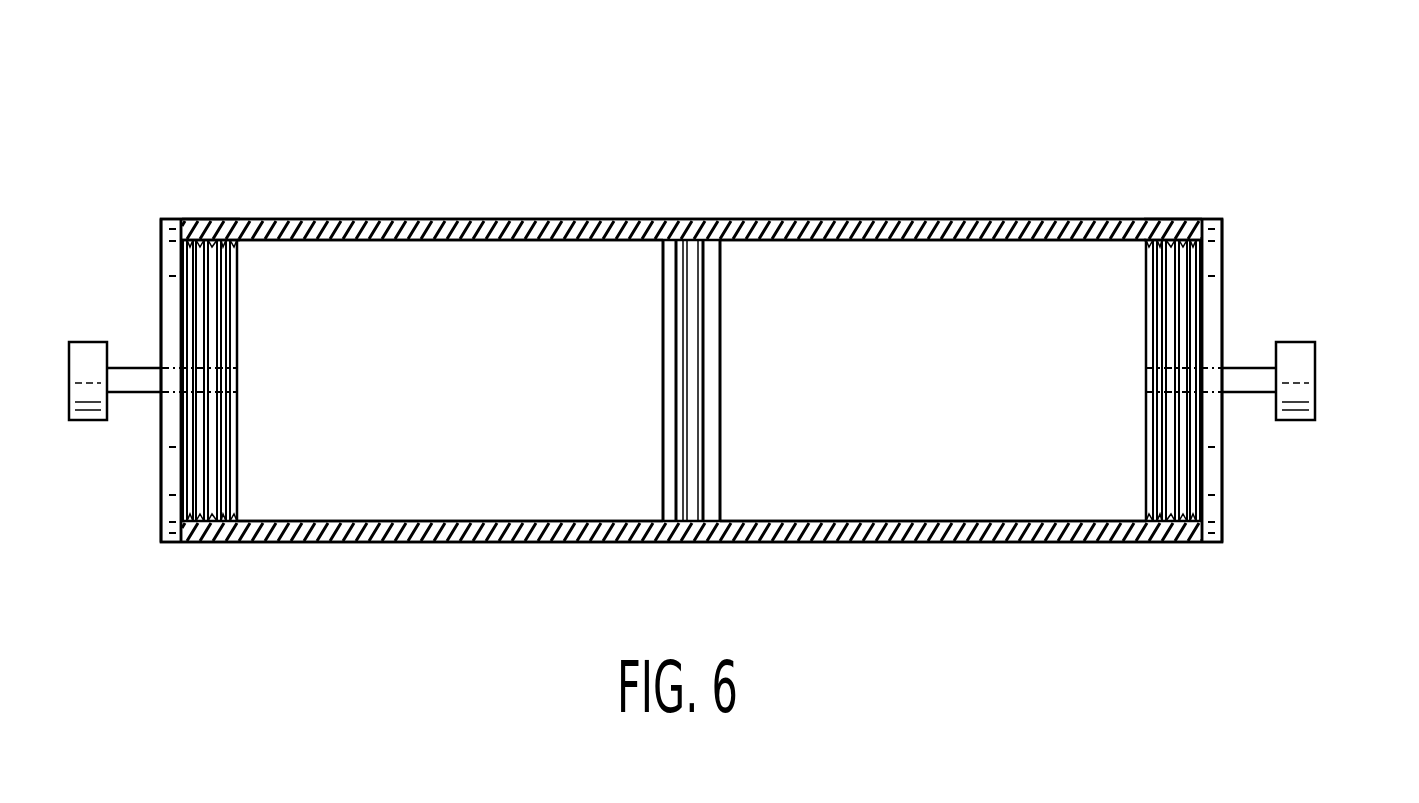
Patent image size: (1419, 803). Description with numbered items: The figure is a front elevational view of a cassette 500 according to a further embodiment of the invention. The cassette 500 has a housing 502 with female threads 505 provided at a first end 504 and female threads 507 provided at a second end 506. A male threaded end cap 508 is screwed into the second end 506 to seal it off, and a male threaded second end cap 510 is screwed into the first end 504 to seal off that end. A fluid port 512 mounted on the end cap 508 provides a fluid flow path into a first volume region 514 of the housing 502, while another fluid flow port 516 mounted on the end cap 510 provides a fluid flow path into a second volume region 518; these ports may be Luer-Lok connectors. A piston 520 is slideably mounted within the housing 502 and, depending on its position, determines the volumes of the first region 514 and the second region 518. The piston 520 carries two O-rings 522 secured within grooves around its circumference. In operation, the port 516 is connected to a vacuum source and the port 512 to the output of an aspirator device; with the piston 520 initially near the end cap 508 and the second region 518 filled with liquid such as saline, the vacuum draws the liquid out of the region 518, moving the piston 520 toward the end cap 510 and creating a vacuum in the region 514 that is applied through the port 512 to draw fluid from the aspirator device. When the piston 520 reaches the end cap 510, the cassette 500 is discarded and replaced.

The cassette 500 is at (1040, 67).
The housing 502 is at (930, 220).
The first end 504 is at (207, 218).
The female threads 505 is at (236, 250).
The second end 506 is at (1187, 220).
The female threads 507 is at (1152, 245).
The male threaded end cap 508 is at (1222, 268).
The second end cap 510 is at (160, 310).
The fluid port 512 is at (1313, 380).
The first volume region 514 is at (1040, 500).
The fluid flow port 516 is at (93, 420).
The second volume region 518 is at (285, 500).
The piston 520 is at (720, 367).
The O-rings 522 is at (682, 307).